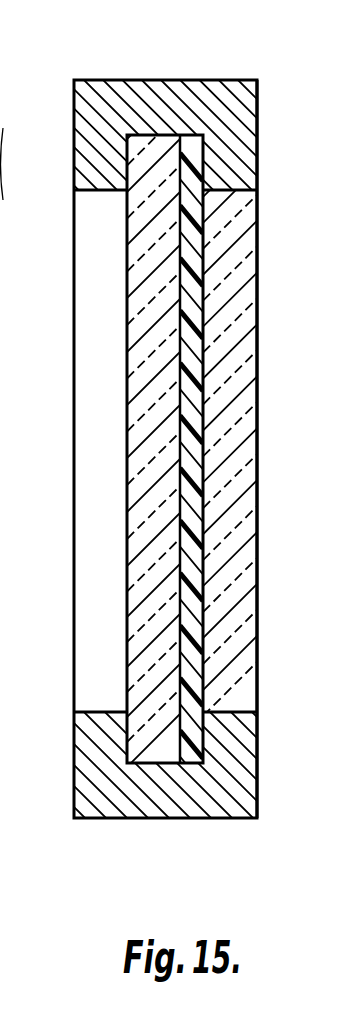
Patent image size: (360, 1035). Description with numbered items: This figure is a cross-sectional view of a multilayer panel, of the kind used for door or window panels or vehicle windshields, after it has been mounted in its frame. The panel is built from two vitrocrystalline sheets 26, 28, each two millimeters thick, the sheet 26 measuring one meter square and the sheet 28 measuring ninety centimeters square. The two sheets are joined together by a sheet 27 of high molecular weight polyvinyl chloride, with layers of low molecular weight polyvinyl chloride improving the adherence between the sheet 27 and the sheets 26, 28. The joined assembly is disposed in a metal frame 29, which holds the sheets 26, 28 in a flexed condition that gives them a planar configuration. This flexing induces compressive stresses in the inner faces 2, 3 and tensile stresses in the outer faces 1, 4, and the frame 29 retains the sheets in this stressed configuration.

The face 1 is at (127, 273).
The face 2 is at (200, 235).
The face 3 is at (183, 153).
The face 4 is at (257, 230).
The vitrocrystalline sheet 26 is at (147, 632).
The sheet of high molecular weight polyvinyl chloride 27 is at (195, 707).
The vitrocrystalline sheet 28 is at (240, 617).
The metal frame 29 is at (110, 100).